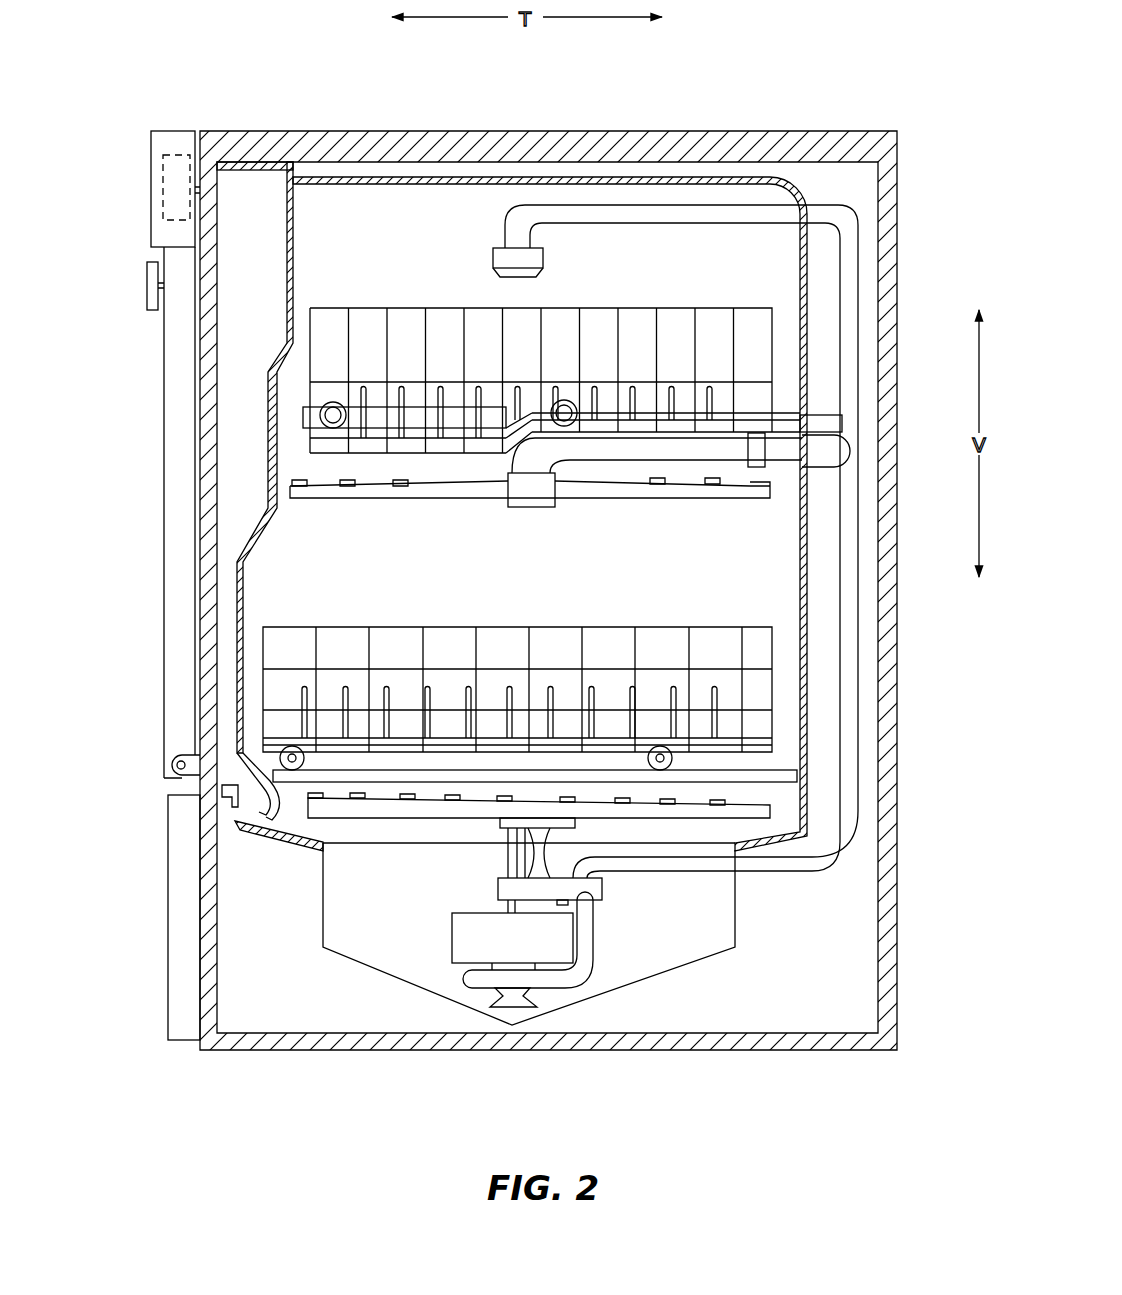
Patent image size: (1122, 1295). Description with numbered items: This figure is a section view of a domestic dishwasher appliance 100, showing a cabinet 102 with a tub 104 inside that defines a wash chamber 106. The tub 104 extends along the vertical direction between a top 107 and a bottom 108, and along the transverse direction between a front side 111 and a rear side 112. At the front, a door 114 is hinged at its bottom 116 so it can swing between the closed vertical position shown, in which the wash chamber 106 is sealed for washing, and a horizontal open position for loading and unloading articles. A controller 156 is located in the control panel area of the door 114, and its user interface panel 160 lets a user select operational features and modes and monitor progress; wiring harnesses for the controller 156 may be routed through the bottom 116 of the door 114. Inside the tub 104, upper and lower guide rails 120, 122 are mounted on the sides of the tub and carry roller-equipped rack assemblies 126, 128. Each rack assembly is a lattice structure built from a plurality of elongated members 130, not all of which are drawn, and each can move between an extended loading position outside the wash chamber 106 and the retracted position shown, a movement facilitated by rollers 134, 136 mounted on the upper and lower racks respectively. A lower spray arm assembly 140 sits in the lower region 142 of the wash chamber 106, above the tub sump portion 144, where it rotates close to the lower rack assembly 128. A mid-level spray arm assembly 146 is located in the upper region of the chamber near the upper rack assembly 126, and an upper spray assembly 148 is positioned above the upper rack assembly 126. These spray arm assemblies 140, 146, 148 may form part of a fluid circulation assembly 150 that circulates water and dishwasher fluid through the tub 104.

The dishwasher appliance 100 is at (745, 88).
The cabinet 102 is at (900, 190).
The tub 104 is at (420, 579).
The wash chamber 106 is at (287, 569).
The top 107 is at (432, 190).
The bottom 108 is at (780, 830).
The front side 111 is at (300, 216).
The rear side 112 is at (799, 248).
The door 114 is at (163, 648).
The bottom of door 116 is at (165, 778).
The upper guide rail 120 is at (318, 428).
The lower guide rail 122 is at (283, 778).
The upper rack assembly 126 is at (373, 296).
The lower rack assembly 128 is at (661, 622).
The elongated members 130 is at (445, 625).
The rollers 134 is at (325, 438).
The rollers 136 is at (648, 755).
The lower spray arm assembly 140 is at (685, 812).
The lower region 142 is at (795, 763).
The tub sump portion 144 is at (323, 890).
The mid-level spray arm assembly 146 is at (575, 488).
The upper spray assembly 148 is at (538, 271).
The fluid circulation assembly 150 is at (863, 565).
The controller 156 is at (165, 185).
The user interface panel 160 is at (150, 287).